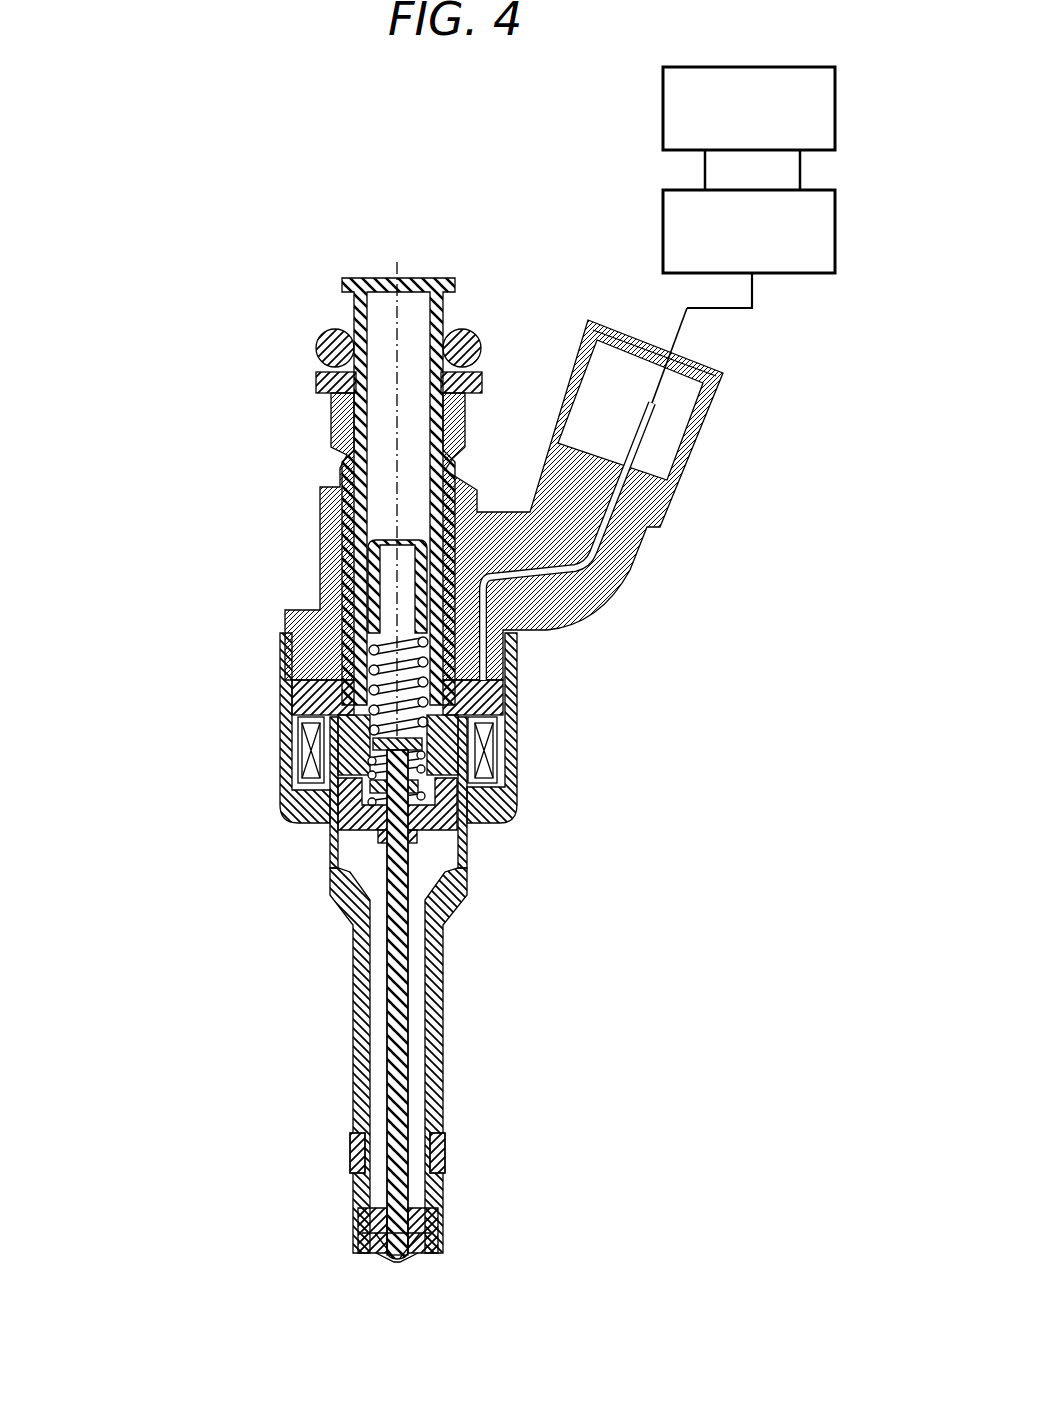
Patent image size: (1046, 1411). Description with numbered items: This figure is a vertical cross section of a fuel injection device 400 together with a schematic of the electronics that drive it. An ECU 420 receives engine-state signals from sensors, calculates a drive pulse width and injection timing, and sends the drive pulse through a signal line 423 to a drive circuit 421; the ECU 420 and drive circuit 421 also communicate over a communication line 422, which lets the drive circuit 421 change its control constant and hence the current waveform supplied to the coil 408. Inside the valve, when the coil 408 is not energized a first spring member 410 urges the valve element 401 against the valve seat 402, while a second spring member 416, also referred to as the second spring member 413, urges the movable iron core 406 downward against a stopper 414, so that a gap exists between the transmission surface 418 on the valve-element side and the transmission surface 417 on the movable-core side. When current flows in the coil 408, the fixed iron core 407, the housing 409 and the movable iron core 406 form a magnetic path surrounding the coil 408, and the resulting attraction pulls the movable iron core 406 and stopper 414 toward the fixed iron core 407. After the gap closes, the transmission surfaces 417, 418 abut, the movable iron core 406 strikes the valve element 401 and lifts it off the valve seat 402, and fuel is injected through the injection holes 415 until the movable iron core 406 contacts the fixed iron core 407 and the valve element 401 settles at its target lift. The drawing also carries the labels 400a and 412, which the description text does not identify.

The fuel injection device 400 is at (222, 300).
The central axis 400a is at (395, 270).
The valve element 401 is at (410, 1063).
The valve seat 402 is at (357, 1250).
The movable iron core 406 is at (330, 830).
The fixed iron core 407 is at (470, 745).
The coil 408 is at (283, 677).
The housing 409 is at (515, 698).
The first spring member 410 is at (517, 657).
The fuel inlet pipe / fuel passage 412 is at (420, 302).
The second spring member 413 is at (521, 1060).
The stopper 414 is at (377, 838).
The injection hole 415 is at (280, 733).
The second spring member 416 is at (282, 778).
The transmission surface on a side near the movable iron core 417 is at (450, 803).
The transmission surface on a side near the valve element 418 is at (332, 860).
The ECU 420 is at (665, 95).
The drive circuit 421 is at (792, 265).
The communication line 422 is at (807, 170).
The signal line 423 is at (703, 165).